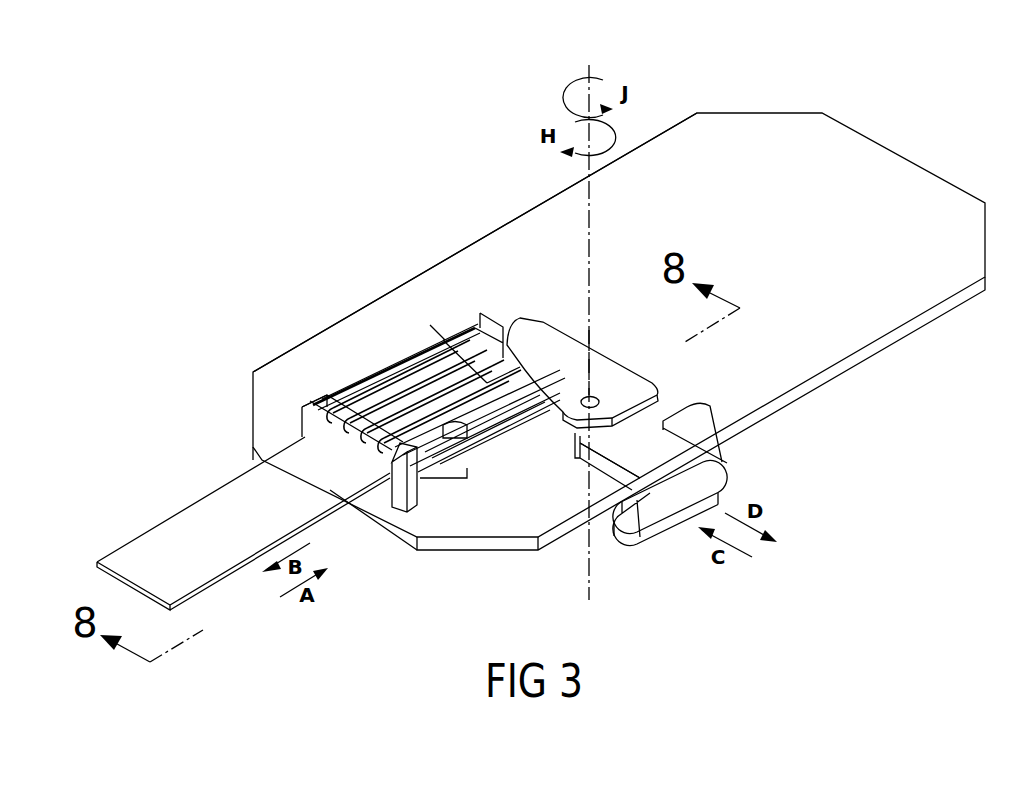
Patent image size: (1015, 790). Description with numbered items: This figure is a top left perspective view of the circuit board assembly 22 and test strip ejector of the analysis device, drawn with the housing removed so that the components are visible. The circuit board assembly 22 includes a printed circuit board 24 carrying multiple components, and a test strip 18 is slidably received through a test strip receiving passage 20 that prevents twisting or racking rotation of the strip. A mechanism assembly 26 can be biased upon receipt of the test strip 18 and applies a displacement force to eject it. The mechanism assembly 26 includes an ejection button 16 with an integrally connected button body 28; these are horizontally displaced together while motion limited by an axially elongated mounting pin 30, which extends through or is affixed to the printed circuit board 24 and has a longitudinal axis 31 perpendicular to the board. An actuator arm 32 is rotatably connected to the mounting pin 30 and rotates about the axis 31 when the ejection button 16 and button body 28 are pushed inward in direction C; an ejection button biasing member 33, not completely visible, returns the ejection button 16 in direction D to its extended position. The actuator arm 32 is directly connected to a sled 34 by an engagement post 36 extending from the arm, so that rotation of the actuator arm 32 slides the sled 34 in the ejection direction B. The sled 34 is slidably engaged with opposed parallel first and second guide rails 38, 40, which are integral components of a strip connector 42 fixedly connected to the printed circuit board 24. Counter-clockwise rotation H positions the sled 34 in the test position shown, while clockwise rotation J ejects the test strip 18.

The ejection button 16 is at (710, 483).
The test strip 18 is at (155, 548).
The test strip receiving passage 20 is at (404, 414).
The circuit board assembly 22 is at (912, 112).
The printed circuit board 24 is at (509, 238).
The mechanism assembly 26 is at (645, 428).
The button body 28 is at (680, 408).
The mounting pin 30 is at (570, 453).
The longitudinal axis 31 is at (593, 328).
The actuator arm 32 is at (537, 330).
The ejection button biasing member 33 is at (613, 520).
The sled 34 is at (435, 335).
The engagement post 36 is at (478, 335).
The first guide rail 38 is at (453, 470).
The second guide rail 40 is at (353, 387).
The strip connector 42 is at (312, 390).